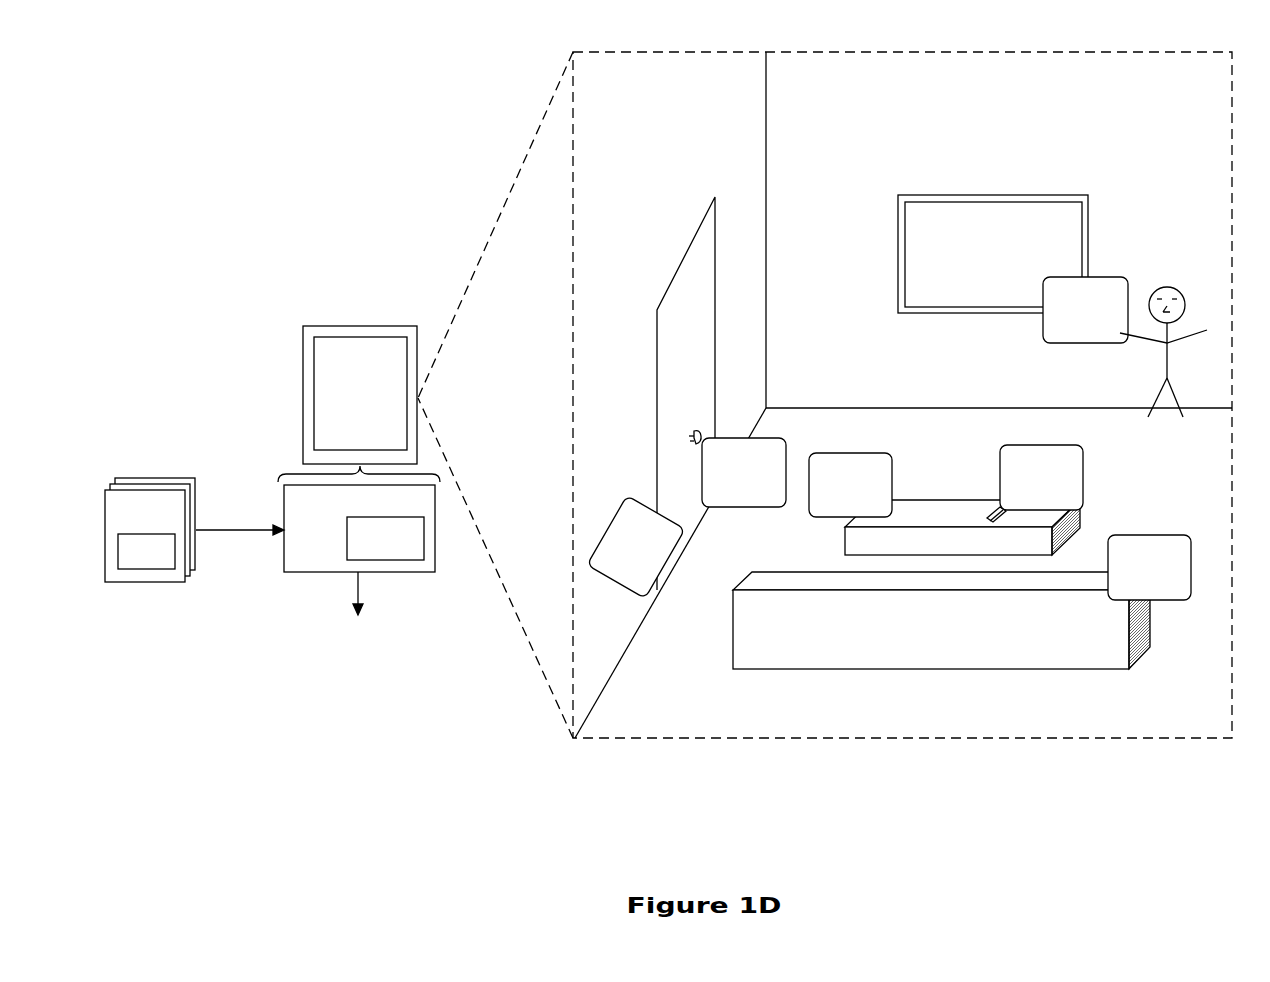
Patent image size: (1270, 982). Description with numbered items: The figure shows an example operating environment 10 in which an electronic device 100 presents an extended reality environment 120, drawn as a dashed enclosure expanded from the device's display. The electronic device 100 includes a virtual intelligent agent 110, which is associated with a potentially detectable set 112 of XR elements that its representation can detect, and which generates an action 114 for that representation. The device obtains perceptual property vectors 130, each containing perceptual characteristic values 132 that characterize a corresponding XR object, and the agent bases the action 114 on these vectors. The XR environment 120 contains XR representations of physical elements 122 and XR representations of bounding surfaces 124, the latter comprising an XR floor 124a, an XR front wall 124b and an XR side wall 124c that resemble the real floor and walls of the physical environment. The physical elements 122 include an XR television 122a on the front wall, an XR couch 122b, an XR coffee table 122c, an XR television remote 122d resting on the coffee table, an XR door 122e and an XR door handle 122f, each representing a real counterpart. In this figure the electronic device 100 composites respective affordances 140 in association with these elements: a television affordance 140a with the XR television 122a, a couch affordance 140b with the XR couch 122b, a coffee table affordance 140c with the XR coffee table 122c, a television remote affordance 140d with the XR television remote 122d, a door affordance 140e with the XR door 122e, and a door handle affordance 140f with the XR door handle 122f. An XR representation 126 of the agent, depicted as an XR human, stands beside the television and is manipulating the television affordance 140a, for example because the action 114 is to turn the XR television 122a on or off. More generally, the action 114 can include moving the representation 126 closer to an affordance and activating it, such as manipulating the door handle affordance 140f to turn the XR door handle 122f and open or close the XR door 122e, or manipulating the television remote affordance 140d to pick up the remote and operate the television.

The operating environment 10 is at (119, 25).
The electronic device 100 is at (340, 406).
The virtual intelligent agent 110 is at (292, 518).
The potentially detectable set 112 is at (367, 550).
The action 114 is at (358, 609).
The extended reality environment 120 is at (570, 46).
The XR representations of physical elements 122 is at (872, 432).
The XR television 122a is at (942, 263).
The XR couch 122b is at (977, 639).
The XR coffee table 122c is at (844, 538).
The XR television remote 122d is at (985, 515).
The XR door 122e is at (664, 344).
The XR door handle 122f is at (698, 431).
The XR representations of bounding surfaces 124 is at (903, 395).
The XR floor 124a is at (1112, 458).
The XR front wall 124b is at (1106, 106).
The XR side wall 124c is at (645, 116).
The XR representation of the VIA 126 is at (1172, 386).
The perceptual property vectors 130 is at (125, 523).
The perceptual characteristic values 132 is at (127, 566).
The affordances 140 is at (889, 438).
The television affordance 140a is at (1062, 309).
The couch affordance 140b is at (1126, 568).
The coffee table affordance 140c is at (826, 484).
The television remote affordance 140d is at (1017, 478).
The door affordance 140e is at (636, 547).
The door handle affordance 140f is at (718, 473).